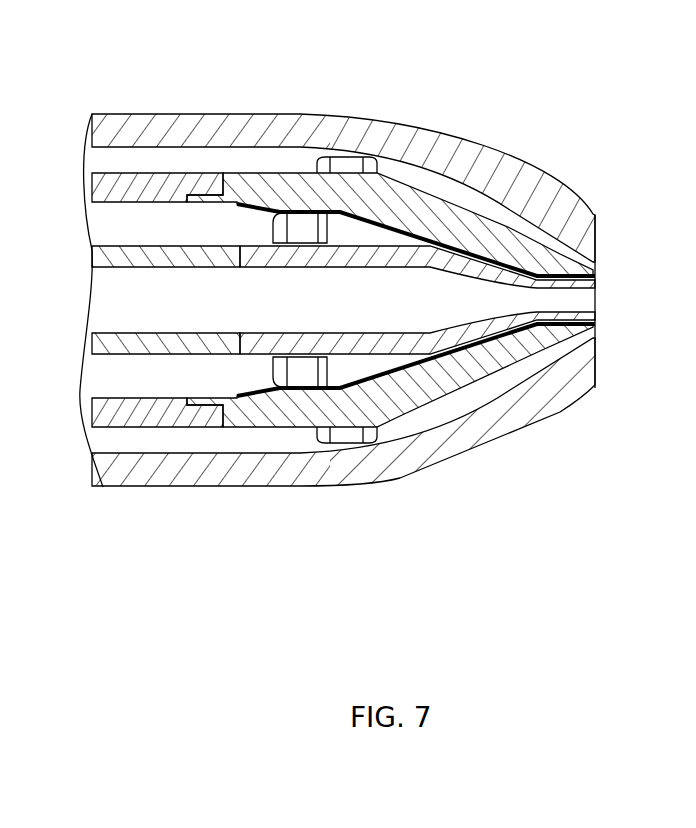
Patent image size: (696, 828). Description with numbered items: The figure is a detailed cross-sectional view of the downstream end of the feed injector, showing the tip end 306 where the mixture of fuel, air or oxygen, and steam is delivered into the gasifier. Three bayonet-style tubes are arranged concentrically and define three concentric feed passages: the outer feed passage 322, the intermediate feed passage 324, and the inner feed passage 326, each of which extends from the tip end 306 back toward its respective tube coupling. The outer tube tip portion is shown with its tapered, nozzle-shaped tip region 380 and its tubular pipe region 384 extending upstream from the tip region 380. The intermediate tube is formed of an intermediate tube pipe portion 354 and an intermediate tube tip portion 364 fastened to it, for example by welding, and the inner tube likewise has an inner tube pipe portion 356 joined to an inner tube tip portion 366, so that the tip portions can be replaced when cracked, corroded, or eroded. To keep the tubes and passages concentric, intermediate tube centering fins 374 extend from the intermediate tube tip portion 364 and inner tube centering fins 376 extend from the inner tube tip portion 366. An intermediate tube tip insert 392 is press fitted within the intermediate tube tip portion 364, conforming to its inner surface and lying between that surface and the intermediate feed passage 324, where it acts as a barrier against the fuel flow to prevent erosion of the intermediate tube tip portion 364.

The tip end 306 is at (616, 320).
The outer feed passage 322 is at (143, 442).
The intermediate feed passage 324 is at (143, 385).
The inner feed passage 326 is at (143, 302).
The intermediate tube pipe portion 354 is at (107, 172).
The inner tube pipe portion 356 is at (118, 333).
The intermediate tube tip portion 364 is at (493, 158).
The inner tube tip portion 366 is at (573, 316).
The intermediate tube centering fins 374 is at (320, 444).
The inner tube centering fins 376 is at (275, 392).
The tip region 380 is at (560, 190).
The pipe region 384 is at (243, 114).
The intermediate tube tip insert 392 is at (425, 422).